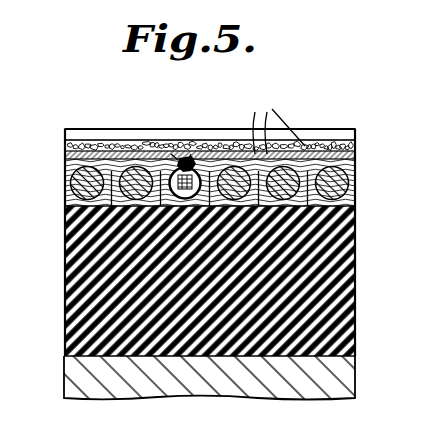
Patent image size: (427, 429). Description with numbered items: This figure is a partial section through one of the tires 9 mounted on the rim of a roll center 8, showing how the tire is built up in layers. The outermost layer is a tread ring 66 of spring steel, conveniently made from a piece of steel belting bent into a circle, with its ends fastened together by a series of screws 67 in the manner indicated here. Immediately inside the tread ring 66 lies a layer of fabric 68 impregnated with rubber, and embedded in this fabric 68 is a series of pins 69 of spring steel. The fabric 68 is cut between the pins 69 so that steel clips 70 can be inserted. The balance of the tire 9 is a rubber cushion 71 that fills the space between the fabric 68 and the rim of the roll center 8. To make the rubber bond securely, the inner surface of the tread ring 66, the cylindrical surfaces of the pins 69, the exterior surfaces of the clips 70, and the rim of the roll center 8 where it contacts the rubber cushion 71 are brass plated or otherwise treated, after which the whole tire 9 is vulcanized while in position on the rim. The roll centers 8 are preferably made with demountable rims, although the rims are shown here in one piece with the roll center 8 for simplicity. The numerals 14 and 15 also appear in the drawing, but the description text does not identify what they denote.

The roll center 8 is at (68, 368).
The tire 9 is at (347, 252).
The covering structure 14 is at (57, 137).
The top cover sheet 15 is at (83, 129).
The tread ring 66 is at (347, 150).
The screws 67 is at (162, 146).
The layer of fabric 68 is at (341, 153).
The pins 69 is at (277, 121).
The steel clips 70 is at (338, 186).
The rubber cushion 71 is at (325, 293).